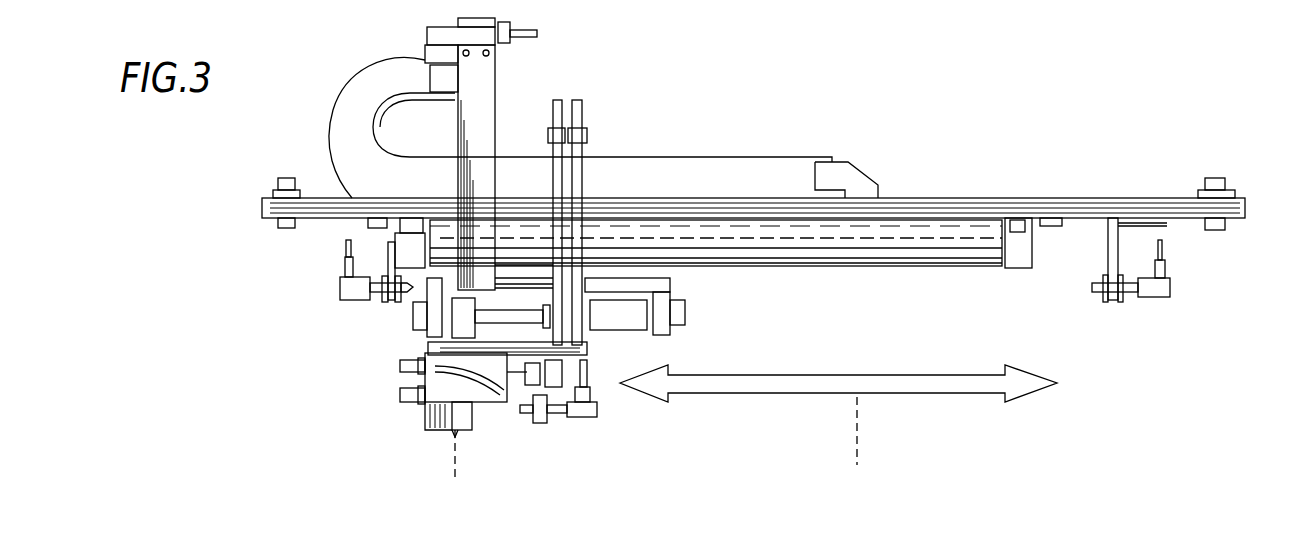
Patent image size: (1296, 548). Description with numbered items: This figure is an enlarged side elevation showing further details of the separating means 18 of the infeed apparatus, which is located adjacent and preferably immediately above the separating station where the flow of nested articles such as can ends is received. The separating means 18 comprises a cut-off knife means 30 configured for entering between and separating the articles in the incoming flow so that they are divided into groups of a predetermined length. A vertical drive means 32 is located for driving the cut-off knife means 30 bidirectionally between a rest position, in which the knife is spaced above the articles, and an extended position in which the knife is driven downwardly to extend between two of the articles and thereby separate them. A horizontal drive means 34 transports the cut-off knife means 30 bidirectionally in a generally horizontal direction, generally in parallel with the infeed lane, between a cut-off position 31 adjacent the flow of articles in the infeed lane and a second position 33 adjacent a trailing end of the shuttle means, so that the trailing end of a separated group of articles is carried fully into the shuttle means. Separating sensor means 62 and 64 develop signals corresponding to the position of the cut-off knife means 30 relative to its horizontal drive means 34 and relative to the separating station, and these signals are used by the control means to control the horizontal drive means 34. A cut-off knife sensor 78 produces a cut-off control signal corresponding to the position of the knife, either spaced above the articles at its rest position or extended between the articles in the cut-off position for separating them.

The separating means 18 is at (716, 92).
The cut-off knife means 30 is at (447, 433).
The cut-off position 31 is at (458, 456).
The vertical drive means 32 is at (440, 372).
The second position 33 is at (862, 441).
The horizontal drive means 34 is at (943, 240).
The separating sensor means 62 is at (340, 285).
The separating sensor means 64 is at (1170, 285).
The cut-off knife sensor 78 is at (527, 424).